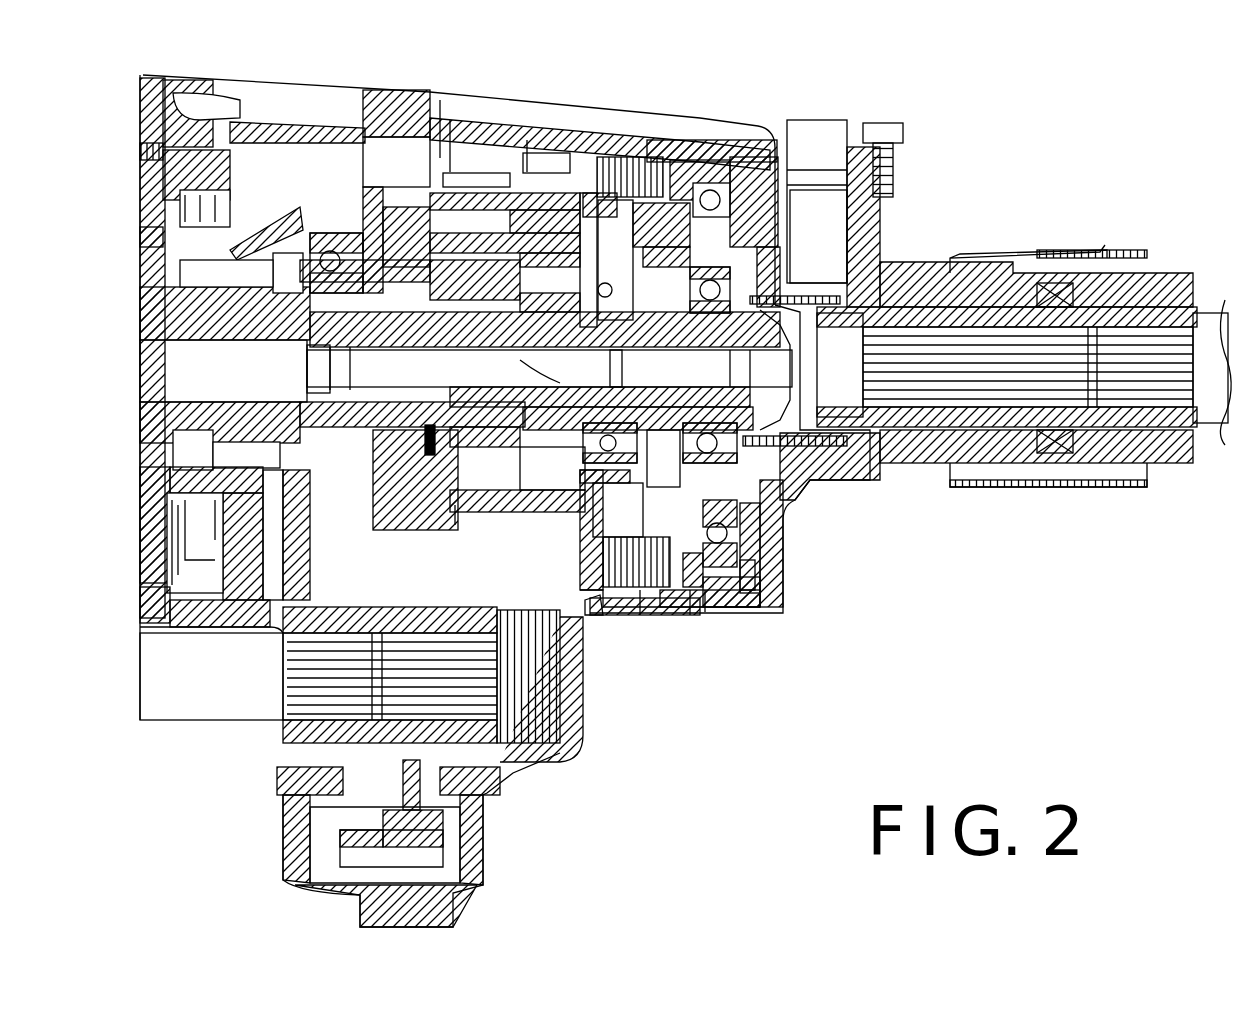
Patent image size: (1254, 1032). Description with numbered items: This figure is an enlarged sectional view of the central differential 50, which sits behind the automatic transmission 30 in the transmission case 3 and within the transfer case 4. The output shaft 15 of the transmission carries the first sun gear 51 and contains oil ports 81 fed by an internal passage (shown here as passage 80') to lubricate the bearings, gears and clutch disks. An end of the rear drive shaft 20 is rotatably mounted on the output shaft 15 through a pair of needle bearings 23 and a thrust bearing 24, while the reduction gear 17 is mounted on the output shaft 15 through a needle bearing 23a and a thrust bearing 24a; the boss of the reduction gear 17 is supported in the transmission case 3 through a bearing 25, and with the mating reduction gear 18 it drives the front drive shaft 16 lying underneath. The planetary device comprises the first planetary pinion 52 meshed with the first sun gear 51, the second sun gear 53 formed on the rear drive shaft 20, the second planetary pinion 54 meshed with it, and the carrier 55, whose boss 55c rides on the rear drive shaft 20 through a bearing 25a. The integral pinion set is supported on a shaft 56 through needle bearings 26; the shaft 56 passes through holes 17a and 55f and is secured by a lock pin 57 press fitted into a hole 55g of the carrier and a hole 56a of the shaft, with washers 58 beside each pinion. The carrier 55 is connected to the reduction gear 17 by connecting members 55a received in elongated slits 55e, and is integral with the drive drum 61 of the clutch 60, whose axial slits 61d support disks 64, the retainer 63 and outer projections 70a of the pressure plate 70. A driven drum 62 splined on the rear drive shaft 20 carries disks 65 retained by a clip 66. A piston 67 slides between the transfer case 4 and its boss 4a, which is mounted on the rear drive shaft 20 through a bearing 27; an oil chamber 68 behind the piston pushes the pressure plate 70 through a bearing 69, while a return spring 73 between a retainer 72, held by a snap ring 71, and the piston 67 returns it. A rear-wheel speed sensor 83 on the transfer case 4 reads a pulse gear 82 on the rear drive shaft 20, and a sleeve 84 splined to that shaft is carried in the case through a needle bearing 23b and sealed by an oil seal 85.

The transmission case 3 is at (232, 96).
The transfer case 4 is at (870, 240).
The boss of the transfer case 4a is at (795, 283).
The output shaft 15 is at (160, 415).
The front drive shaft 16 is at (520, 742).
The reduction gear 17 is at (395, 182).
The holes of the reduction gear 17a is at (363, 192).
The reduction gear 18 is at (440, 830).
The rear drive shaft 20 is at (1050, 370).
The needle bearings 23 is at (540, 371).
The needle bearing 23a is at (225, 327).
The needle bearing 23b is at (965, 305).
The thrust bearing 24 is at (520, 440).
The thrust bearing 24a is at (460, 425).
The bearing 25 is at (292, 202).
The bearing 25a is at (555, 383).
The needle bearings 26 is at (502, 208).
The bearing 27 is at (781, 364).
The automatic transmission 30 is at (152, 197).
The central differential 50 is at (440, 155).
The first sun gear 51 is at (480, 447).
The first planetary pinion 52 is at (452, 172).
The second sun gear 53 is at (568, 432).
The second planetary pinion 54 is at (527, 172).
The carrier 55 is at (580, 555).
The carrier connecting members 55a is at (455, 510).
The boss of the carrier 55c is at (566, 288).
The elongated slits 55e is at (583, 520).
The holes of the carrier 55f is at (546, 178).
The hole in the carrier 55g is at (615, 180).
The shaft 56 is at (505, 282).
The hole in the shaft 56a is at (550, 243).
The lock pin 57 is at (603, 190).
The washers 58 is at (445, 186).
The fluid operated multiple-disk friction clutch 60 is at (600, 615).
The drive drum 61 is at (720, 135).
The axial slits 61d is at (817, 201).
The driven drum 62 is at (687, 289).
The retainer 63 is at (650, 135).
The disks 64 is at (685, 150).
The disks 65 is at (640, 600).
The clip 66 is at (690, 600).
The piston 67 is at (770, 565).
The oil chamber 68 is at (765, 525).
The bearing 69 is at (765, 545).
The pressure plate 70 is at (720, 590).
The outer projections 70a is at (710, 600).
The snap ring 71 is at (633, 455).
The retainer 72 is at (618, 508).
The return spring 73 is at (715, 487).
The main shaft 80' is at (549, 368).
The oil ports 81 is at (476, 369).
The pulse gear 82 is at (810, 362).
The rear-wheel speed sensor 83 is at (882, 128).
The sleeve 84 is at (1120, 315).
The oil seal 85 is at (1057, 283).